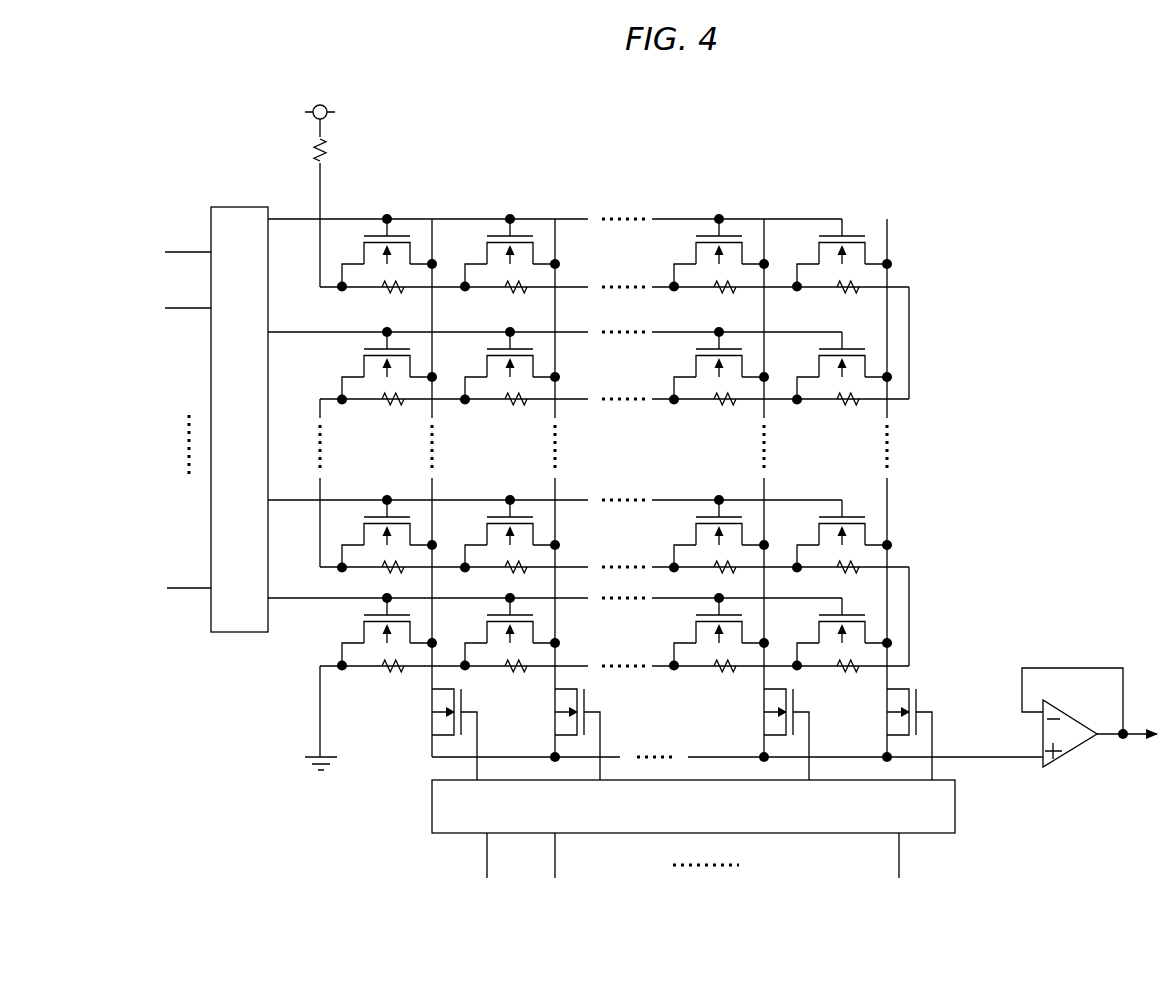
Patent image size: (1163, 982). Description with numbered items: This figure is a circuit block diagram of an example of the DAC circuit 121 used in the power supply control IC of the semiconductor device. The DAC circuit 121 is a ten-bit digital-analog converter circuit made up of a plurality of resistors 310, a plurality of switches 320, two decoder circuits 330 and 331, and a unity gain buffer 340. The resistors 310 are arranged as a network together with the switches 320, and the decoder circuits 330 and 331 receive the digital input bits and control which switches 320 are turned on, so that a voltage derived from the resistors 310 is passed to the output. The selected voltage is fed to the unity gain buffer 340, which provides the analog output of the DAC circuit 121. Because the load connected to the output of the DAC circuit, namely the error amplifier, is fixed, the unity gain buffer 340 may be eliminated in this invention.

The DAC circuit 121 is at (661, 478).
The resistor 310 is at (327, 141).
The switch 320 is at (399, 233).
The decoder circuit 330 is at (238, 205).
The decoder circuit 331 is at (432, 805).
The unity gain buffer 340 is at (1078, 752).